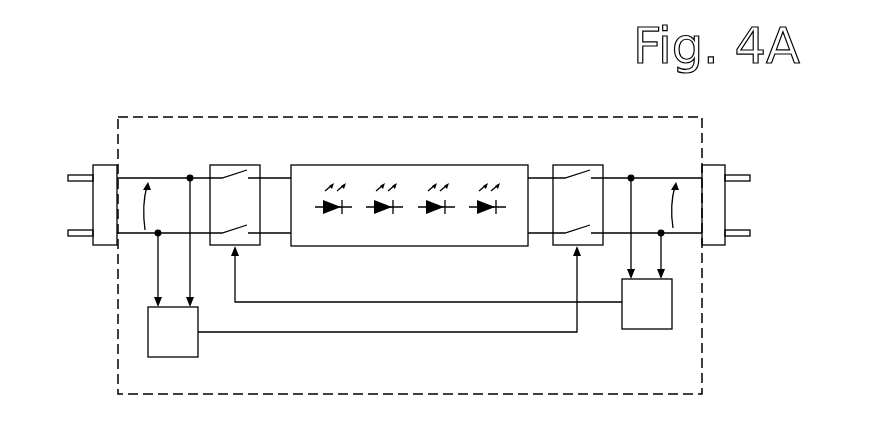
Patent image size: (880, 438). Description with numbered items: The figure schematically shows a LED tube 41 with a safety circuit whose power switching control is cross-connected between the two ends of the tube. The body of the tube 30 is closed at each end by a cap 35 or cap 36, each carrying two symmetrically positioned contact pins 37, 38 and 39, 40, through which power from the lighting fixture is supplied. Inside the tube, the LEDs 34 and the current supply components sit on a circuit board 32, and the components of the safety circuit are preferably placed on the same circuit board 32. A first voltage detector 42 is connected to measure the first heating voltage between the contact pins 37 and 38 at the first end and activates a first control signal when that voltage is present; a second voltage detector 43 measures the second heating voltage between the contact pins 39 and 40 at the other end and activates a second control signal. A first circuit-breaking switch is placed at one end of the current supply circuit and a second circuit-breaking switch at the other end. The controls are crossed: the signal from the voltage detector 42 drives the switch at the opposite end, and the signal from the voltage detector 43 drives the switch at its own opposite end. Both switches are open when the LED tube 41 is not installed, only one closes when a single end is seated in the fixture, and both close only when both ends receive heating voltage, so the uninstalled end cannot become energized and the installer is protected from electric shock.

The tube 30 is at (497, 117).
The LED tube 41 is at (443, 99).
The circuit board 32 is at (418, 224).
The LEDs 34 is at (335, 213).
The cap 35 is at (104, 165).
The cap 36 is at (717, 165).
The contact pin 37 is at (81, 174).
The contact pin 38 is at (81, 237).
The contact pin 39 is at (745, 175).
The contact pin 40 is at (745, 238).
The voltage detector 42 is at (198, 357).
The voltage detector 43 is at (622, 329).